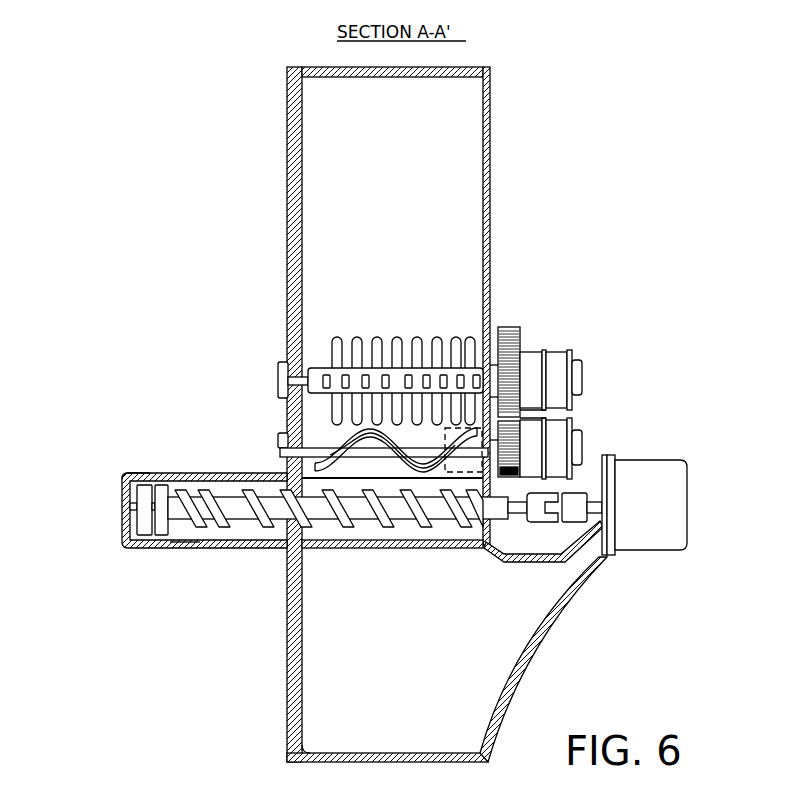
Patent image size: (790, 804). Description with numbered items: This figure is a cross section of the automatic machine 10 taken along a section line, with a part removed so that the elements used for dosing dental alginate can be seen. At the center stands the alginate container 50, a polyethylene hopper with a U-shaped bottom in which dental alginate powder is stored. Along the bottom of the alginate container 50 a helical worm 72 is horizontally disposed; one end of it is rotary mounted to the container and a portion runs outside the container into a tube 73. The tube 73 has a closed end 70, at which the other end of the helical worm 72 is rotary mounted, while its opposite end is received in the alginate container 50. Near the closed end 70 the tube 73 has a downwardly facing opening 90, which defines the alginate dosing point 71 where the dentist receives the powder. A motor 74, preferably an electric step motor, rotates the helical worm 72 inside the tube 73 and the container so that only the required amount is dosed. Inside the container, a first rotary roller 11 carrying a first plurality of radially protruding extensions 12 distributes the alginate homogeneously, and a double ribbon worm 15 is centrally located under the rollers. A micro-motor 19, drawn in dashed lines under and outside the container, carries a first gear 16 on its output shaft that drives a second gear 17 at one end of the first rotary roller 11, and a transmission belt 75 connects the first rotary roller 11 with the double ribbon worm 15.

The automatic machine 10 is at (214, 96).
The first rotary roller 11 is at (315, 367).
The first plurality of radially protruding extensions 12 is at (466, 337).
The double ribbon worm 15 is at (357, 447).
The first gear 16 is at (520, 420).
The second gear 17 is at (520, 327).
The micro-motor 19 is at (443, 441).
The alginate container 50 is at (490, 137).
The closed end 70 is at (122, 527).
The alginate dosing point 71 is at (183, 547).
The helical worm 72 is at (427, 560).
The tube 73 is at (148, 473).
The motor 74 is at (687, 500).
The transmission belt 75 is at (553, 351).
The downwardly facing opening 90 is at (185, 547).